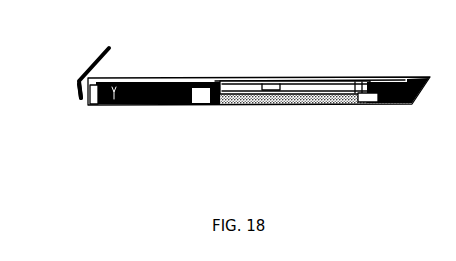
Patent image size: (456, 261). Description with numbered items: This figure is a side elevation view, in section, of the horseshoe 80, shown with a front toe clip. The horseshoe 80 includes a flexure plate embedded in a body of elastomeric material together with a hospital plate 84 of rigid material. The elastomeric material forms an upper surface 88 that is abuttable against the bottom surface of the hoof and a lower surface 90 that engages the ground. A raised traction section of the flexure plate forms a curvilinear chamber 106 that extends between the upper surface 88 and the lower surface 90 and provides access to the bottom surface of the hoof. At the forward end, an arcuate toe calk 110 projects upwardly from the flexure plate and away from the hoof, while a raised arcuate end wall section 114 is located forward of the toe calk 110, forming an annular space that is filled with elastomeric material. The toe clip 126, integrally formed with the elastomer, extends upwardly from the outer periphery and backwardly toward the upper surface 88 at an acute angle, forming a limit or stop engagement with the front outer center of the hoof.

The horseshoe 80 is at (136, 192).
The hospital plate 84 is at (240, 107).
The upper surface 88 is at (152, 78).
The lower surface 90 is at (397, 106).
The curvilinear chamber 106 is at (273, 78).
The arcuate toe calk 110 is at (88, 101).
The raised arcuate end wall section 114 is at (77, 95).
The toe clip 126 is at (93, 63).